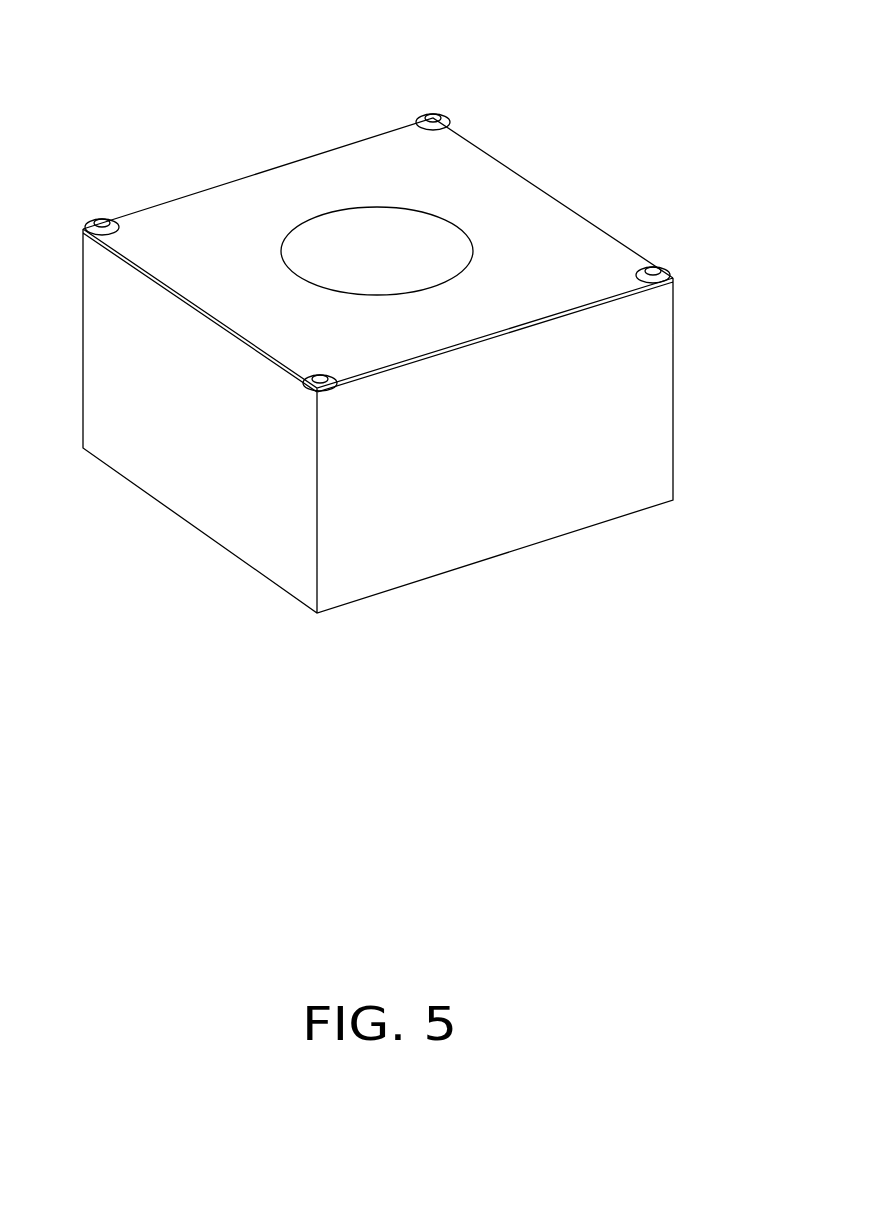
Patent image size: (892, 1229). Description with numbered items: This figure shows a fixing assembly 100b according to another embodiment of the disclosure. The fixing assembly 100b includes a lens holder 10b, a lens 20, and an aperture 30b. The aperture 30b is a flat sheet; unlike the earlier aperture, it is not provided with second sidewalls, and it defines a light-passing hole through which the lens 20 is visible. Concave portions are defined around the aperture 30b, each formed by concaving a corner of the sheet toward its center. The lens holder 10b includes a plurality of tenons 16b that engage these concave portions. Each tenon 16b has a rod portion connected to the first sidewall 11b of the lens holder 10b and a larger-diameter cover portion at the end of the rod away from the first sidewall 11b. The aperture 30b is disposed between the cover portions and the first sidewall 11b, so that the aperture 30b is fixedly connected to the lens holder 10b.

The fixing assembly 100b is at (418, 40).
The lens holder 10b is at (700, 441).
The first sidewall 11b is at (645, 382).
The aperture 30b is at (482, 162).
The lens 20 is at (333, 228).
The tenon 16b is at (655, 268).